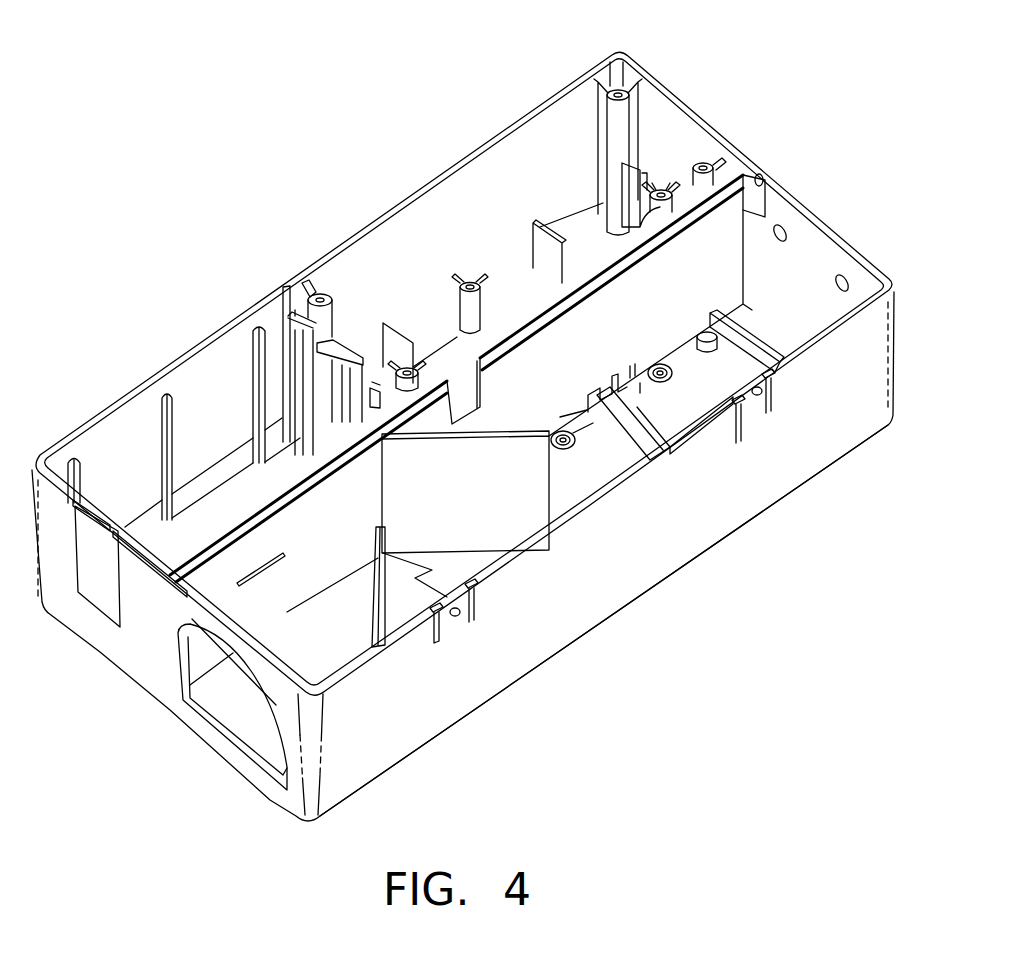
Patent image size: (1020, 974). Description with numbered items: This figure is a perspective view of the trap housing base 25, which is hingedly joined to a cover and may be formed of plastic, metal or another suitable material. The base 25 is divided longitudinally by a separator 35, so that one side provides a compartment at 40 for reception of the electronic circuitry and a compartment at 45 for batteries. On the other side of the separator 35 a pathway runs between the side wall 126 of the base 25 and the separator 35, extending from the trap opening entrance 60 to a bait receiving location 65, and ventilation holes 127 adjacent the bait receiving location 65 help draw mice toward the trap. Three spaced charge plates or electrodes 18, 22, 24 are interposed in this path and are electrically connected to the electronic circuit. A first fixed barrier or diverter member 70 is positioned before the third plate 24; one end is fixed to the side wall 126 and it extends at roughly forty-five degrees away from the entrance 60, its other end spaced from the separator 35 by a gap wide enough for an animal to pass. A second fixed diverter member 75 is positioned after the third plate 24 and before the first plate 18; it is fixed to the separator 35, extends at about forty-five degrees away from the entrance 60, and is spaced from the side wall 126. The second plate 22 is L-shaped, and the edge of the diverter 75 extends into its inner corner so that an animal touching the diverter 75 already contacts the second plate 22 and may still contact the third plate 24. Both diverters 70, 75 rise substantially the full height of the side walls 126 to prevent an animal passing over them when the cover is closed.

The base 25 is at (704, 514).
The side wall 126 is at (438, 700).
The trap opening entrance 60 is at (254, 711).
The ventilation holes 127 is at (843, 276).
The bait receiving location 65 is at (763, 330).
The first charge plate 18 is at (694, 391).
The second charge plate 22 is at (585, 471).
The second diverter member 75 is at (499, 470).
The first diverter member 70 is at (371, 605).
The third charge plate 24 is at (394, 608).
The separator 35 is at (314, 536).
The battery compartment 45 is at (197, 428).
The electronic circuitry compartment 40 is at (465, 245).